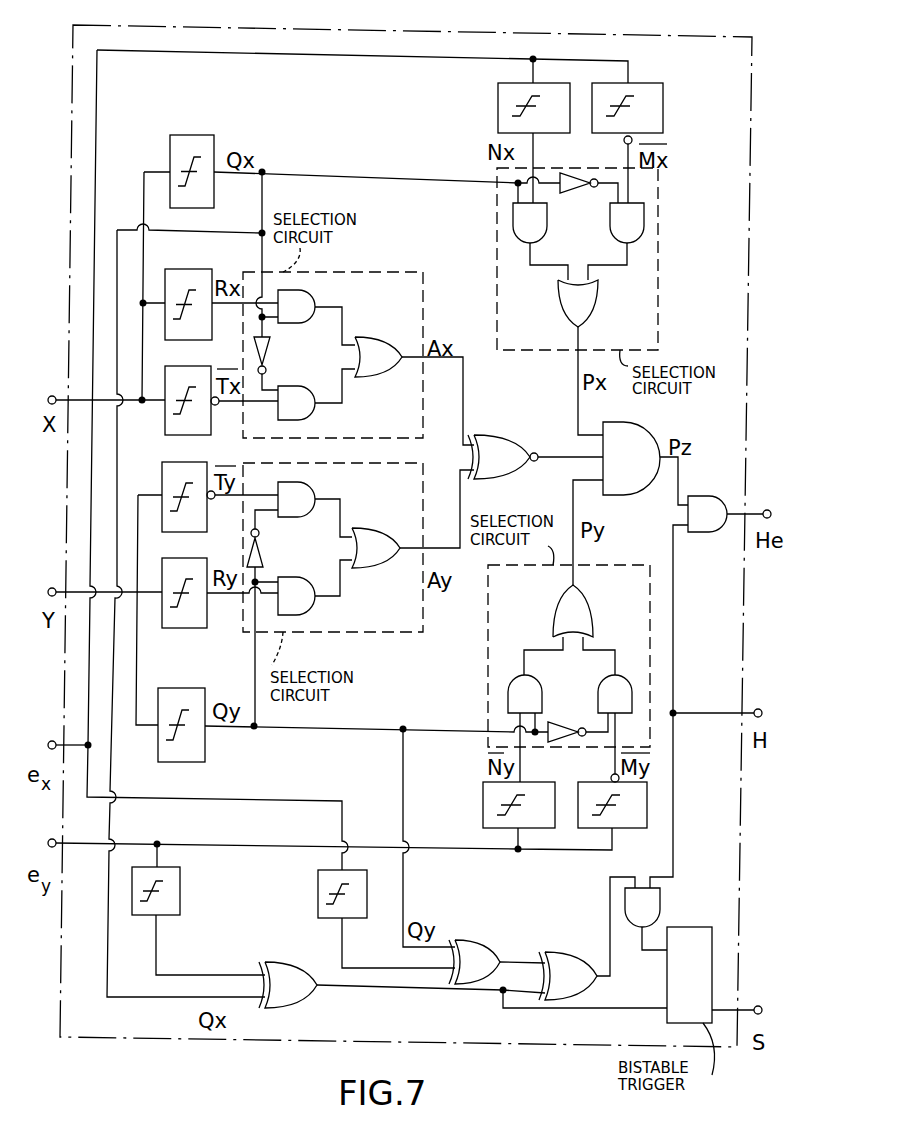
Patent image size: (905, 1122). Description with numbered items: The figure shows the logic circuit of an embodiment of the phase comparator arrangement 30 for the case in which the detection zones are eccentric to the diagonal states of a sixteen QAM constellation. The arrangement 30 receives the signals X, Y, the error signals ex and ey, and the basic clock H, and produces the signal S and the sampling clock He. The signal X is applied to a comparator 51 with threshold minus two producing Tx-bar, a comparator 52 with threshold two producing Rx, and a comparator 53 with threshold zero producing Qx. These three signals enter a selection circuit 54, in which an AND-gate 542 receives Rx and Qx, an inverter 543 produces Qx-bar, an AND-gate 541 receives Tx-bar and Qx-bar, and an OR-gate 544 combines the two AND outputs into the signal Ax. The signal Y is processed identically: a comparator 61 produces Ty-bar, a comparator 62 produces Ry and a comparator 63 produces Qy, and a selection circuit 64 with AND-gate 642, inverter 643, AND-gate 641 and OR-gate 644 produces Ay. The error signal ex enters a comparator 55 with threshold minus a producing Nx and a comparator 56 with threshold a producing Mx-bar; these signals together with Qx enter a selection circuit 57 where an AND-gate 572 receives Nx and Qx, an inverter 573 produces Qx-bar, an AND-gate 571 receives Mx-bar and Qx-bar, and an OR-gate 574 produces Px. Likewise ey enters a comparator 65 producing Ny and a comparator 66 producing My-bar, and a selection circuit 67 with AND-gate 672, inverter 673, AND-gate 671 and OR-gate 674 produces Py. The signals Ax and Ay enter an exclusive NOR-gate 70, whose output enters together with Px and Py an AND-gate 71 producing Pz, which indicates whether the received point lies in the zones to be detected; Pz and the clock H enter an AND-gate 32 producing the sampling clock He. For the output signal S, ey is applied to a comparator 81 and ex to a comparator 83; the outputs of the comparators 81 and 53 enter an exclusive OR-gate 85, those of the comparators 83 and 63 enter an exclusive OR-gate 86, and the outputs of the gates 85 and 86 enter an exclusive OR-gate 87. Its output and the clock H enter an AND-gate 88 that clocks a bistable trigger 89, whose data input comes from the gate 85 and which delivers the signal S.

The phase comparator arrangement 30 is at (661, 37).
The AND-gate 32 is at (706, 532).
The comparator 51 is at (165, 386).
The comparator 52 is at (190, 268).
The comparator 53 is at (180, 135).
The selection circuit 54 is at (372, 272).
The AND-gate 541 is at (300, 420).
The AND-gate 542 is at (300, 290).
The inverter 543 is at (266, 348).
The OR-gate 544 is at (385, 377).
The comparator 55 is at (498, 100).
The comparator 56 is at (663, 106).
The selection circuit 57 is at (660, 280).
The AND-gate 571 is at (644, 226).
The AND-gate 572 is at (513, 224).
The inverter 573 is at (592, 190).
The OR-gate 574 is at (598, 287).
The comparator 61 is at (162, 478).
The comparator 62 is at (185, 628).
The comparator 63 is at (205, 748).
The selection circuit 64 is at (367, 632).
The AND-gate 641 is at (300, 483).
The AND-gate 642 is at (300, 615).
The inverter 643 is at (261, 550).
The OR-gate 644 is at (385, 568).
The comparator 65 is at (483, 792).
The comparator 66 is at (620, 828).
The selection circuit 67 is at (488, 702).
The AND-gate 671 is at (632, 698).
The AND-gate 672 is at (508, 692).
The inverter 673 is at (565, 722).
The OR-gate 674 is at (605, 598).
The exclusive NOR-gate 70 is at (495, 435).
The AND-gate 71 is at (623, 422).
The comparator 81 is at (180, 884).
The comparator 83 is at (318, 896).
The exclusive OR-gate 85 is at (298, 1008).
The exclusive OR-gate 86 is at (470, 940).
The exclusive OR-gate 87 is at (580, 952).
The AND-gate 88 is at (660, 904).
The bistable trigger 89 is at (688, 927).